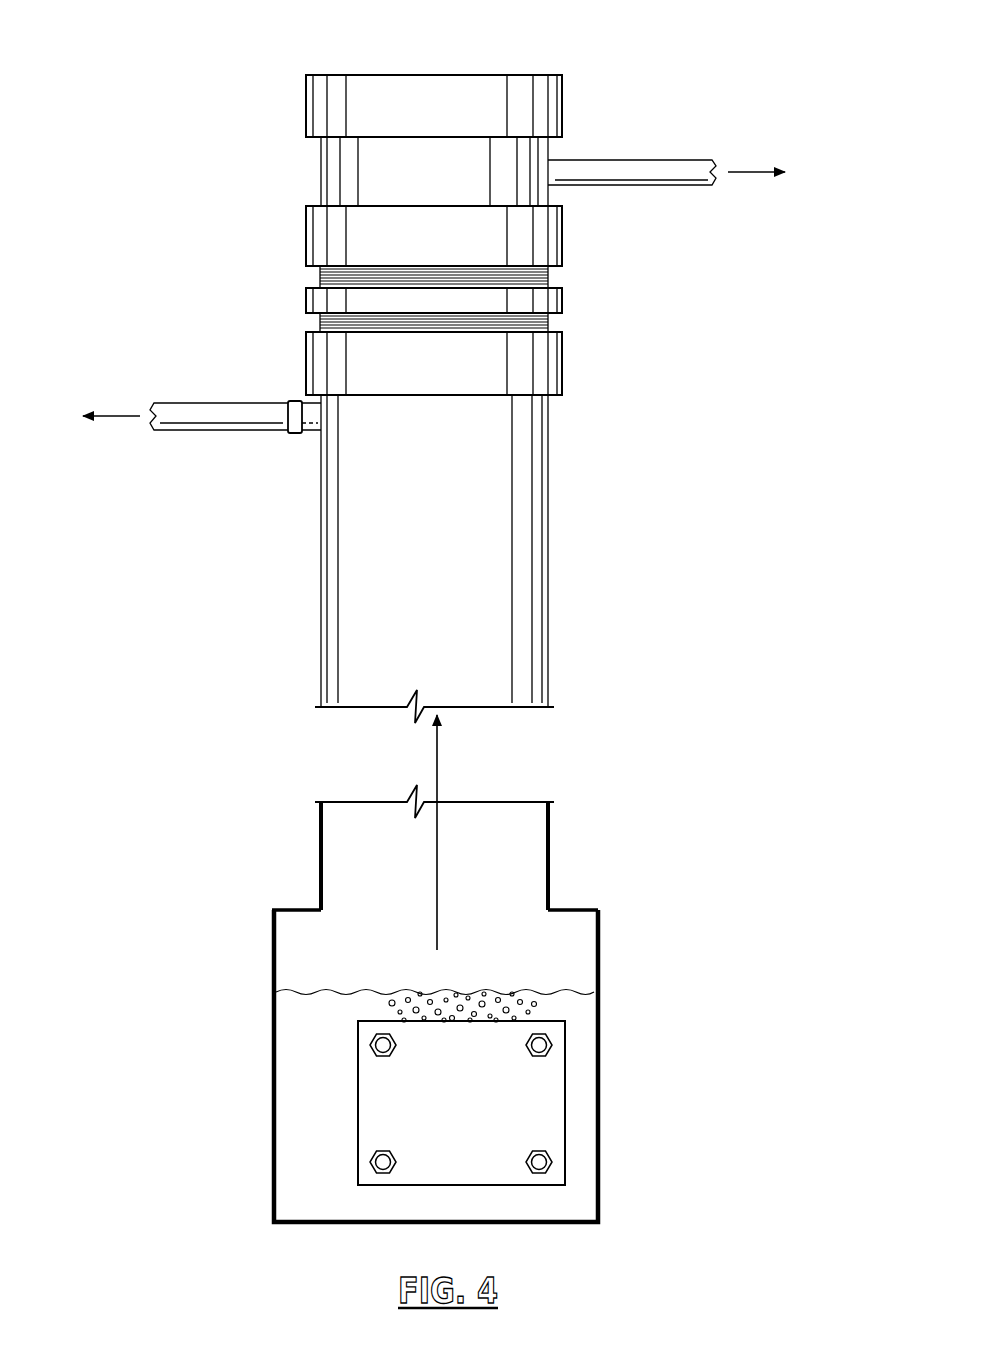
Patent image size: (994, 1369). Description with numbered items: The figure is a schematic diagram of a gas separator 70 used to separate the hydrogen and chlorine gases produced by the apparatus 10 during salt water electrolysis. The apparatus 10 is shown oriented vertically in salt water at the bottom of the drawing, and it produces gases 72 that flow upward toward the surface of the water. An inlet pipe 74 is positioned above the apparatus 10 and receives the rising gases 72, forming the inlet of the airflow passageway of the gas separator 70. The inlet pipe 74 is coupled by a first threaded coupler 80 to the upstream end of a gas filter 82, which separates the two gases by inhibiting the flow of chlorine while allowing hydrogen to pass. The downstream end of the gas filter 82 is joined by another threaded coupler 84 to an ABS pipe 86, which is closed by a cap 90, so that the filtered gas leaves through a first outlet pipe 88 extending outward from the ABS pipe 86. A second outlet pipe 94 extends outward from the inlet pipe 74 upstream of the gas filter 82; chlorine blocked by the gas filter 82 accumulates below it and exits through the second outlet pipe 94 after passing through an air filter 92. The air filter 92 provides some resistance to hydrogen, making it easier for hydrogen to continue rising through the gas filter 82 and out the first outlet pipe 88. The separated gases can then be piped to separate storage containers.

The gas separator 70 is at (210, 172).
The cap 90 is at (542, 108).
The first outlet pipe 88 is at (628, 168).
The ABS pipe 86 is at (523, 192).
The threaded coupler 84 is at (553, 238).
The gas filter 82 is at (555, 295).
The first threaded coupler 80 is at (323, 362).
The inlet pipe 74 is at (343, 632).
The second outlet pipe 94 is at (210, 418).
The air filter 92 is at (297, 433).
The gases 72 is at (437, 852).
The apparatus 10 is at (568, 1107).